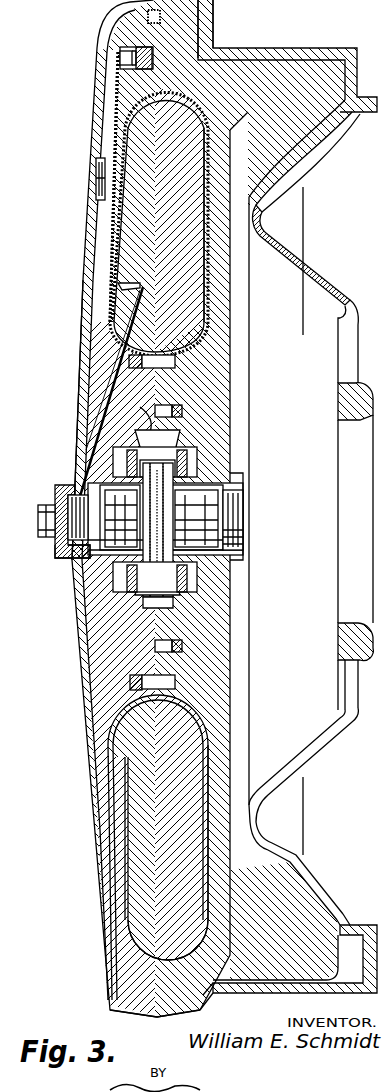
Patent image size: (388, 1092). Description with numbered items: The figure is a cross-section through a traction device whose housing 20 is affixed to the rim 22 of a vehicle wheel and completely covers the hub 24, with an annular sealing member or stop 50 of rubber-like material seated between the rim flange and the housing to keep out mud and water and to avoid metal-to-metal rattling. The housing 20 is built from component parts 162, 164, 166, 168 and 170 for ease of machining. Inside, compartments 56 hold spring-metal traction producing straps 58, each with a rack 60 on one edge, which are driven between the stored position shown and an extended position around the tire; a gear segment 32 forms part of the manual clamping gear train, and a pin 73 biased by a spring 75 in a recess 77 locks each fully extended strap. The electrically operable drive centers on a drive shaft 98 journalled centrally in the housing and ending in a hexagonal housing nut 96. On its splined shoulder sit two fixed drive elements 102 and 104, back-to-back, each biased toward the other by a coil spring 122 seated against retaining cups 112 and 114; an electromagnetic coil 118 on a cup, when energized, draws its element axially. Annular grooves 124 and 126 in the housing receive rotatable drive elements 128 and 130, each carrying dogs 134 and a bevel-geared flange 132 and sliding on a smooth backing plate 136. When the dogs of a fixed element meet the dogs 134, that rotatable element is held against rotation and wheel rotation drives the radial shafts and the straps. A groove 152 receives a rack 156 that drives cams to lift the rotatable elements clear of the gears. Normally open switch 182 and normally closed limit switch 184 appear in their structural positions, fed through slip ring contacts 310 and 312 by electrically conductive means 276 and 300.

The housing 20 is at (90, 127).
The rim 22 is at (300, 50).
The hub 24 is at (322, 288).
The gear segment 32 is at (132, 681).
The sealing member or stop 50 is at (213, 17).
The compartment 56 is at (207, 105).
The traction producing strap 58 is at (208, 133).
The rack 60 is at (212, 200).
The pin 73 is at (118, 62).
The spring 75 is at (153, 53).
The recess 77 is at (157, 38).
The housing nut 96 is at (50, 528).
The drive shaft 98 is at (228, 515).
The fixed drive element 102 is at (120, 573).
The fixed drive element 104 is at (232, 568).
The retaining cup 112 is at (73, 557).
The retaining cup 114 is at (221, 535).
The electromagnetic coil 118 is at (193, 487).
The coil spring 122 is at (108, 498).
The annular groove 124 is at (110, 598).
The annular groove 126 is at (190, 457).
The rotatable drive element 128 is at (140, 440).
The rotatable drive element 130 is at (183, 447).
The flange 132 is at (178, 598).
The dog 134 is at (130, 410).
The backing plate 136 is at (178, 467).
The groove 152 is at (168, 641).
The rack 156 is at (167, 403).
The housing component part 162 is at (97, 778).
The housing component part 164 is at (166, 1000).
The housing component part 166 is at (120, 733).
The housing component part 168 is at (187, 938).
The housing component part 170 is at (222, 733).
The normally open switch 182 is at (120, 284).
The normally closed limit switch 184 is at (98, 176).
The electrically conductive means 276 is at (85, 370).
The electrically conductive means 300 is at (104, 410).
The slip ring contact 310 is at (68, 510).
The slip ring contact 312 is at (62, 540).